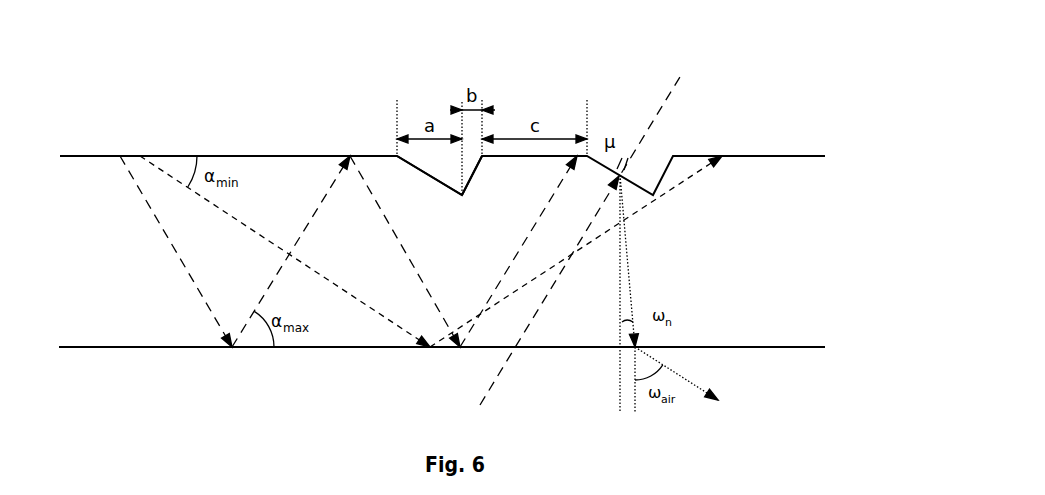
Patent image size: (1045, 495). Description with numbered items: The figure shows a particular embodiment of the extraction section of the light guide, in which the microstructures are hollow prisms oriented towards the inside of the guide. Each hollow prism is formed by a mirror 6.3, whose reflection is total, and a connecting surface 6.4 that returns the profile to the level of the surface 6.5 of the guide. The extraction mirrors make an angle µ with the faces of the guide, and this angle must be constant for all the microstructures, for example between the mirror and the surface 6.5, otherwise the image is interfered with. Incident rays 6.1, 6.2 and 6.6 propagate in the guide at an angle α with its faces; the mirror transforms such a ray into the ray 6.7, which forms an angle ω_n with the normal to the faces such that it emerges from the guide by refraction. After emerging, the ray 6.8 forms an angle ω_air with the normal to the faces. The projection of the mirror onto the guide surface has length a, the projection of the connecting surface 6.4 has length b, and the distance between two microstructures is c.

The incident ray 6.1 is at (177, 257).
The incident ray 6.2 is at (239, 217).
The mirror 6.3 is at (448, 189).
The connecting surface 6.4 is at (474, 172).
The surface of the guide 6.5 is at (536, 158).
The incident ray 6.6 is at (601, 188).
The reflected ray 6.7 is at (630, 272).
The emerging ray 6.8 is at (683, 374).